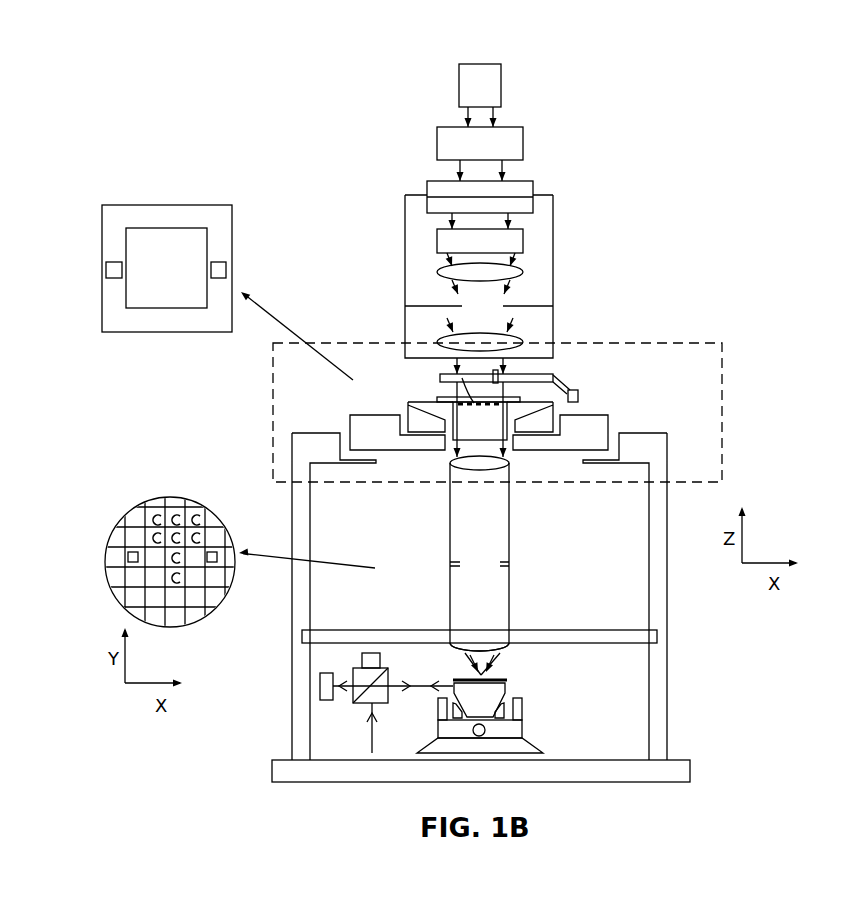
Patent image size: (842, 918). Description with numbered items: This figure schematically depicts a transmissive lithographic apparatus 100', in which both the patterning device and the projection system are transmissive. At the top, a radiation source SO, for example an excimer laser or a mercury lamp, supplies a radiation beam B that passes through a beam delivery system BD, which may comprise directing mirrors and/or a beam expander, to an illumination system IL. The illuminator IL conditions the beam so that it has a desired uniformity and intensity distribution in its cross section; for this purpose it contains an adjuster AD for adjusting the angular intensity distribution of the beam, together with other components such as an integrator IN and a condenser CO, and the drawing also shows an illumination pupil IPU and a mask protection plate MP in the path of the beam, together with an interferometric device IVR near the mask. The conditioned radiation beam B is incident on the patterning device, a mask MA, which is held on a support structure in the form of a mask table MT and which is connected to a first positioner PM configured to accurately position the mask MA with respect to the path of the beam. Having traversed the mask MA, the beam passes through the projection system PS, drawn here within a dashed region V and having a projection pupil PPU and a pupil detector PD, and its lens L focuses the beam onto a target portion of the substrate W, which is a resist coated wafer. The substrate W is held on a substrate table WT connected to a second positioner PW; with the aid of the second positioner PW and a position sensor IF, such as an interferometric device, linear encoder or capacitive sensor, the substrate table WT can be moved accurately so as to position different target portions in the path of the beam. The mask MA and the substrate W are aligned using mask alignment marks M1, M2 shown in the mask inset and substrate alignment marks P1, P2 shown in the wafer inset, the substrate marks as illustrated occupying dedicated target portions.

The lithographic apparatus 100' is at (539, 425).
The radiation source SO is at (501, 88).
The beam delivery system BD is at (523, 150).
The illumination system IL is at (553, 197).
The adjuster AD is at (427, 197).
The integrator IN is at (523, 240).
The illumination pupil IPU is at (523, 306).
The condenser CO is at (520, 342).
The mask protection plate MP is at (440, 377).
The interferometric device IVR is at (578, 392).
The radiation beam B is at (482, 390).
The patterning device MA is at (437, 398).
The mask alignment mark M1 is at (219, 262).
The mask alignment mark M2 is at (112, 262).
The support structure MT is at (553, 403).
The first positioner PM is at (350, 416).
The vacuum chamber V is at (722, 385).
The projection system PS is at (509, 540).
The projection pupil PPU is at (458, 560).
The pupil detector PD is at (505, 566).
The lens L is at (484, 655).
The substrate W is at (455, 680).
The substrate alignment mark P1 is at (133, 552).
The substrate alignment mark P2 is at (211, 552).
The substrate table WT is at (508, 684).
The second positioner PW is at (522, 736).
The position sensor IF is at (346, 709).